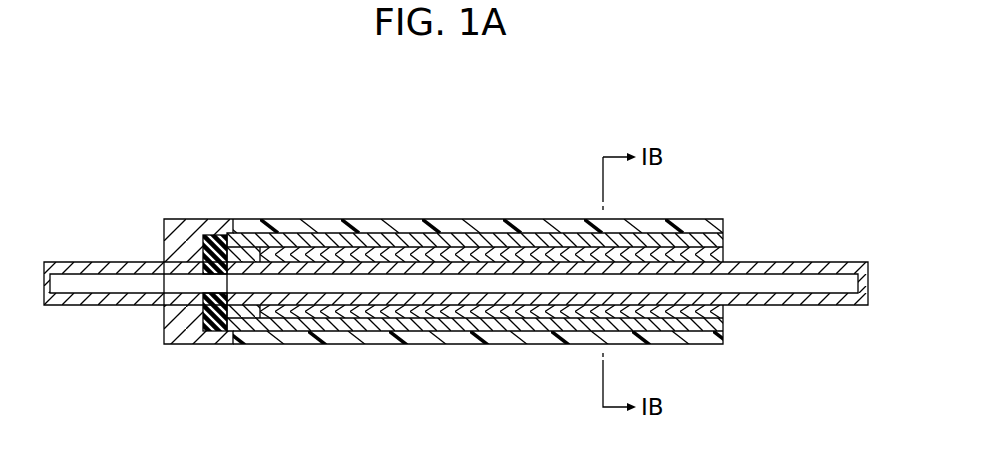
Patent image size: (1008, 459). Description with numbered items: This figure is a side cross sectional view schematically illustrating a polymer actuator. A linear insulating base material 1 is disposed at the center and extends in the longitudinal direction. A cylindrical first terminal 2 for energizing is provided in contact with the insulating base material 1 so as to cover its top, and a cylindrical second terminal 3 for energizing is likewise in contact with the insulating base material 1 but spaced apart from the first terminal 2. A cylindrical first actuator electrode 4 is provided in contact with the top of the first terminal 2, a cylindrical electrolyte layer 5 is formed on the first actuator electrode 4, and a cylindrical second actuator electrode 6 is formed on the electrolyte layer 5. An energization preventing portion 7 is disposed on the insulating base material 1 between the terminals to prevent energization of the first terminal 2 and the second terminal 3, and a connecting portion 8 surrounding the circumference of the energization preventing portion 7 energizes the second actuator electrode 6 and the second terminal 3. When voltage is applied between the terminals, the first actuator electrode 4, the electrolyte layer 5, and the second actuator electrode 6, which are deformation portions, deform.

The insulating base material 1 is at (115, 280).
The first terminal 2 is at (770, 298).
The second terminal 3 is at (77, 303).
The first actuator electrode 4 is at (708, 253).
The electrolyte layer 5 is at (527, 242).
The second actuator electrode 6 is at (403, 228).
The energization preventing portion 7 is at (213, 240).
The connecting portion 8 is at (192, 224).